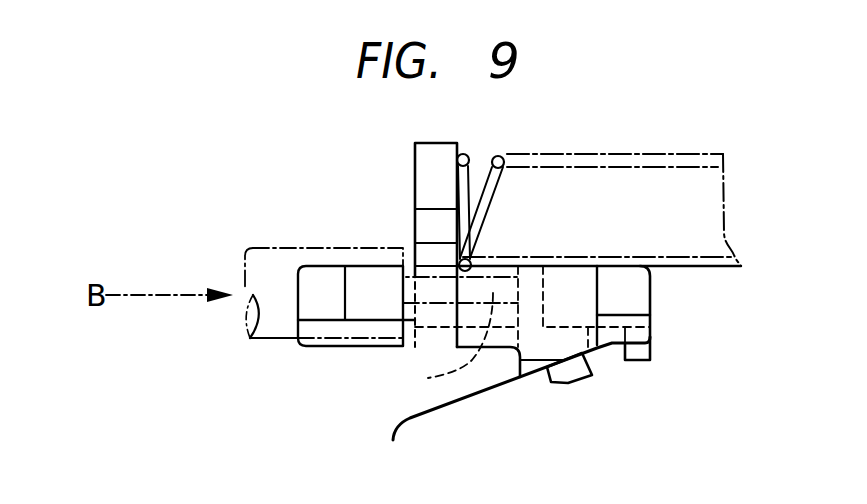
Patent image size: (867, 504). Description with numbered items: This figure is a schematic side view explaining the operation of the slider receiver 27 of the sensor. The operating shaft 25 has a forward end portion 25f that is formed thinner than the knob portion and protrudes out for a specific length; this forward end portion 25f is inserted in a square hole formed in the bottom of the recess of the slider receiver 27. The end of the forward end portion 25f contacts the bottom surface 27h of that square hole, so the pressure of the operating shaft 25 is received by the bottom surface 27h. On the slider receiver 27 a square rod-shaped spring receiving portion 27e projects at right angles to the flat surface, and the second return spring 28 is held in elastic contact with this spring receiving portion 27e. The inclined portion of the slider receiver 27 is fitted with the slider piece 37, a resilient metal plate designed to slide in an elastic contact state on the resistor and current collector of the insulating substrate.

The operating shaft 25 is at (273, 250).
The forward end portion 25f is at (438, 345).
The slider receiver 27 is at (402, 215).
The spring receiving portion 27e is at (457, 145).
The bottom surface 27h is at (502, 327).
The second return spring 28 is at (608, 152).
The slider piece 37 is at (442, 416).